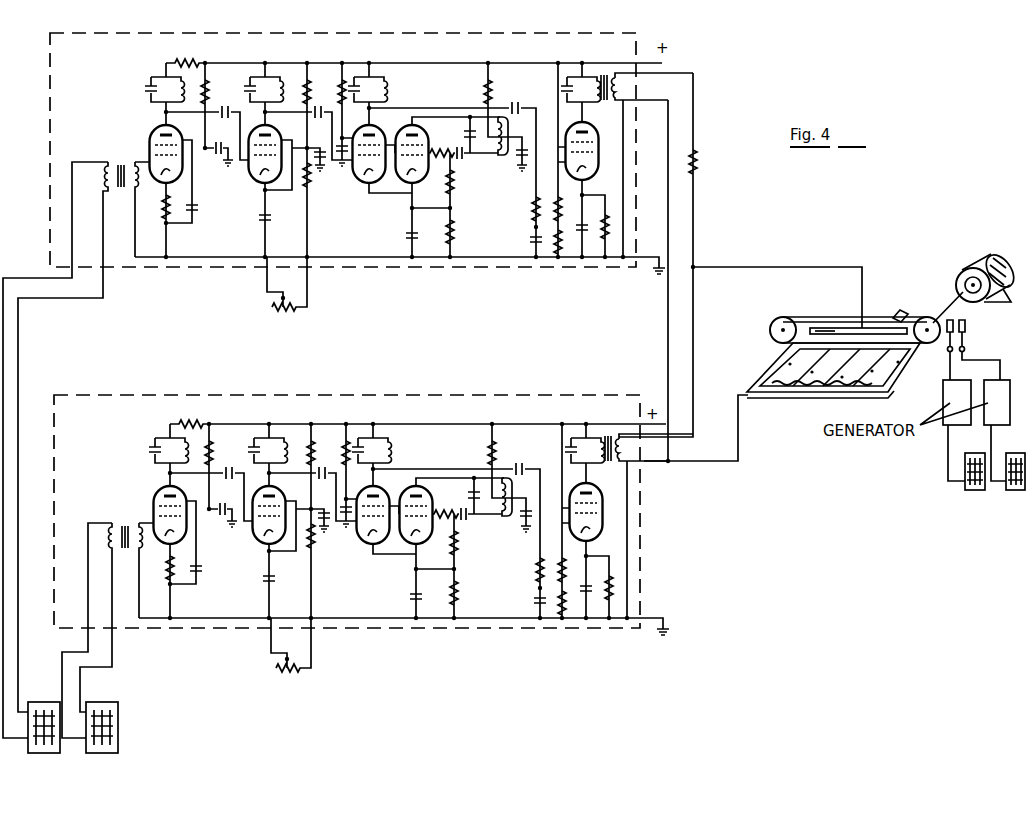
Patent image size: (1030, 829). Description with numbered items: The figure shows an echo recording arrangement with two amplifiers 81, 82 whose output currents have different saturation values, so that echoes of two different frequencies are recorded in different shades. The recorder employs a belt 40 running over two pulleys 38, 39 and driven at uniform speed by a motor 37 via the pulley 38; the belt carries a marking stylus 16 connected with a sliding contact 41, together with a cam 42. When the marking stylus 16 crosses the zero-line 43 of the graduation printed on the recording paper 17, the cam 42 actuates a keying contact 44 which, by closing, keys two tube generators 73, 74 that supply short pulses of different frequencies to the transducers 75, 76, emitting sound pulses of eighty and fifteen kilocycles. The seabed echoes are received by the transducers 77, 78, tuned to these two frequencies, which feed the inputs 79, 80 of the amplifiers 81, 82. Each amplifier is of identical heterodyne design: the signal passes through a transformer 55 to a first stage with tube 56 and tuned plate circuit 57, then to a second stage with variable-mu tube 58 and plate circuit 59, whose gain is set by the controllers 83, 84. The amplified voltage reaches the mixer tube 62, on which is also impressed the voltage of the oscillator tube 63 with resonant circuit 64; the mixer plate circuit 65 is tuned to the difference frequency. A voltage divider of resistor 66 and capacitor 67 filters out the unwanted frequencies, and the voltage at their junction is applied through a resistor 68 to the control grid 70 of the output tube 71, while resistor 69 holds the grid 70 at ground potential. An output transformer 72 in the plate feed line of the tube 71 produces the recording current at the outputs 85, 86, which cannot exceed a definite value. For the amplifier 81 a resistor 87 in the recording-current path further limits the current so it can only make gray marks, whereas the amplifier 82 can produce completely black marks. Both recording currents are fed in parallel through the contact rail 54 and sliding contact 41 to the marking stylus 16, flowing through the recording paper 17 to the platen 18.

The marking stylus 16 is at (828, 338).
The recording paper 17 is at (905, 373).
The platen 18 is at (821, 396).
The motor 37 is at (977, 263).
The pulley 38 is at (932, 318).
The pulley 39 is at (780, 319).
The belt 40 is at (846, 316).
The sliding contact 41 is at (826, 330).
The cam 42 is at (904, 312).
The zero-line 43 is at (758, 383).
The keying contact 44 is at (963, 340).
The contact rail 54 is at (877, 328).
The transformer 55 is at (112, 162).
The tube 56 is at (156, 157).
The tuned plate circuit 57 is at (151, 96).
The variable-mu tube 58 is at (252, 173).
The plate circuit 59 is at (276, 89).
The mixer tube 62 is at (362, 178).
The oscillator tube 63 is at (424, 172).
The resonant circuit 64 is at (492, 153).
The plate circuit 65 is at (385, 88).
The resistor 66 is at (531, 205).
The capacitor 67 is at (531, 240).
The resistor 68 is at (561, 212).
The resistor 69 is at (563, 252).
The control grid 70 is at (559, 162).
The output tube 71 is at (594, 150).
The output transformer 72 is at (600, 72).
The tube generator 73 is at (943, 428).
The tube generator 74 is at (990, 424).
The transducer 75 is at (970, 492).
The transducer 76 is at (1010, 492).
The transducer 77 is at (45, 753).
The transducer 78 is at (108, 753).
The input 79 is at (98, 283).
The input 80 is at (107, 645).
The amplifier 81 is at (450, 34).
The amplifier 82 is at (478, 395).
The controller 83 is at (283, 311).
The controller 84 is at (288, 674).
The output 85 is at (641, 90).
The output 86 is at (638, 459).
The resistor 87 is at (697, 167).